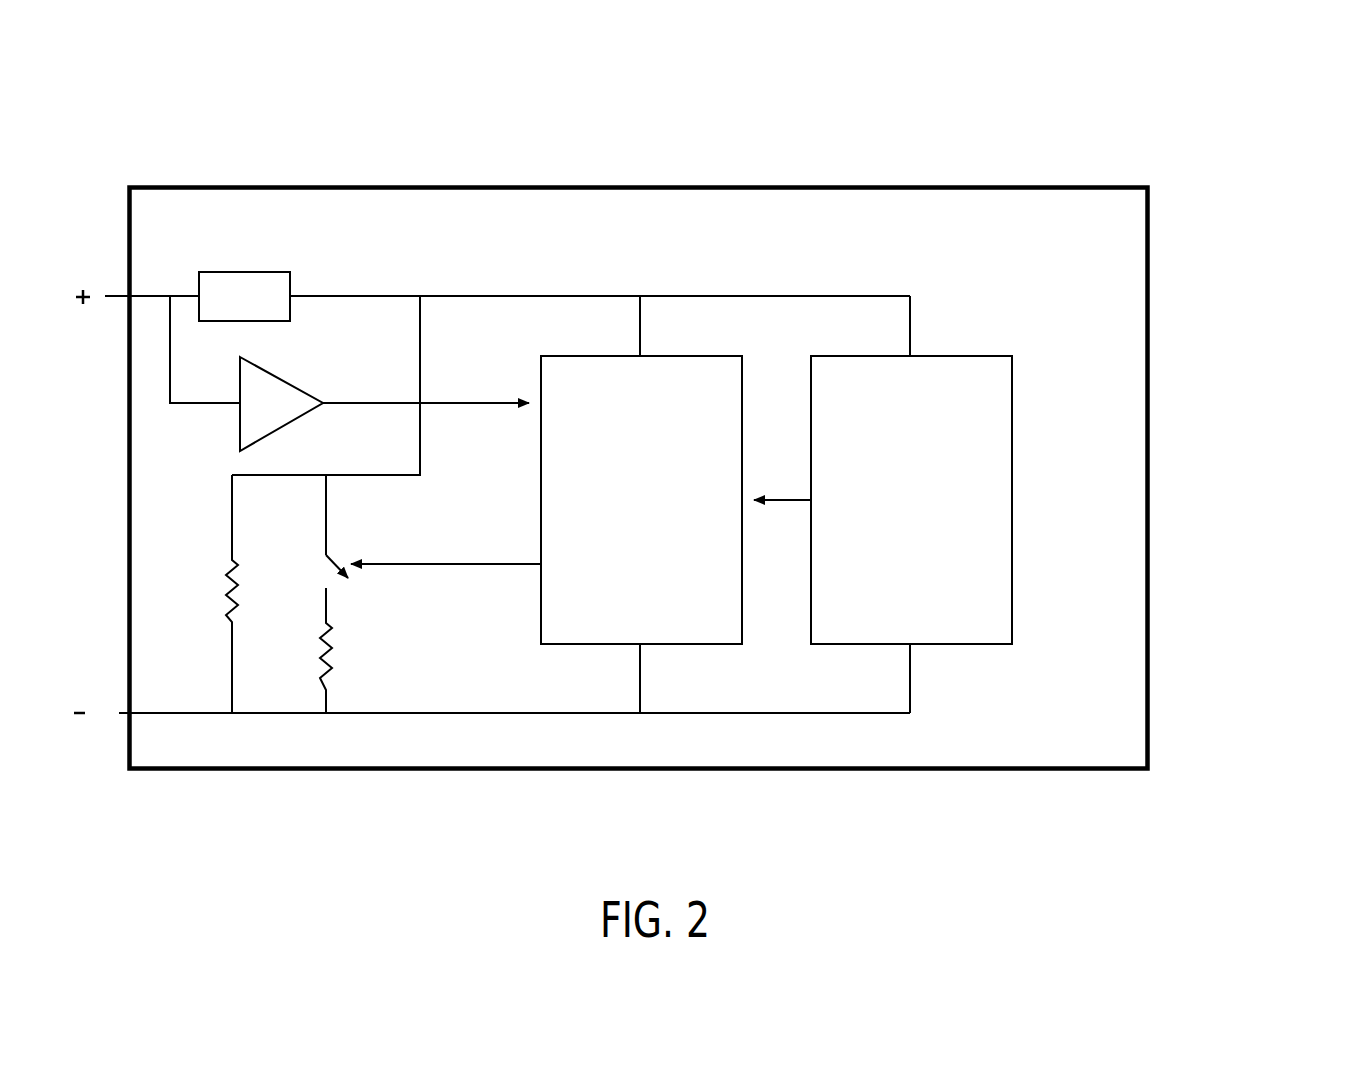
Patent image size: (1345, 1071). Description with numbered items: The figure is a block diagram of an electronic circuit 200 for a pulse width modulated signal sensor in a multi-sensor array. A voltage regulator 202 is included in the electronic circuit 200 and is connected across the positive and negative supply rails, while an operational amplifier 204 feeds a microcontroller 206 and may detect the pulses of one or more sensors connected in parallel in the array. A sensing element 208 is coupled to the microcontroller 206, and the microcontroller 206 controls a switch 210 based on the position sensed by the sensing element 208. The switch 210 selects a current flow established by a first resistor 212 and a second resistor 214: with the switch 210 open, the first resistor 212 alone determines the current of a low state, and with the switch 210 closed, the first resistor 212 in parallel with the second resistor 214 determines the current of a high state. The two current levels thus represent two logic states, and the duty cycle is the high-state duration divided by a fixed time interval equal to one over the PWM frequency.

The electronic circuit 200 is at (1264, 68).
The voltage regulator 202 is at (244, 296).
The operational amplifier 204 is at (384, 404).
The microcontroller 206 is at (641, 500).
The sensing element 208 is at (883, 500).
The switch 210 is at (369, 518).
The first resistor 212 is at (259, 560).
The second resistor 214 is at (364, 617).